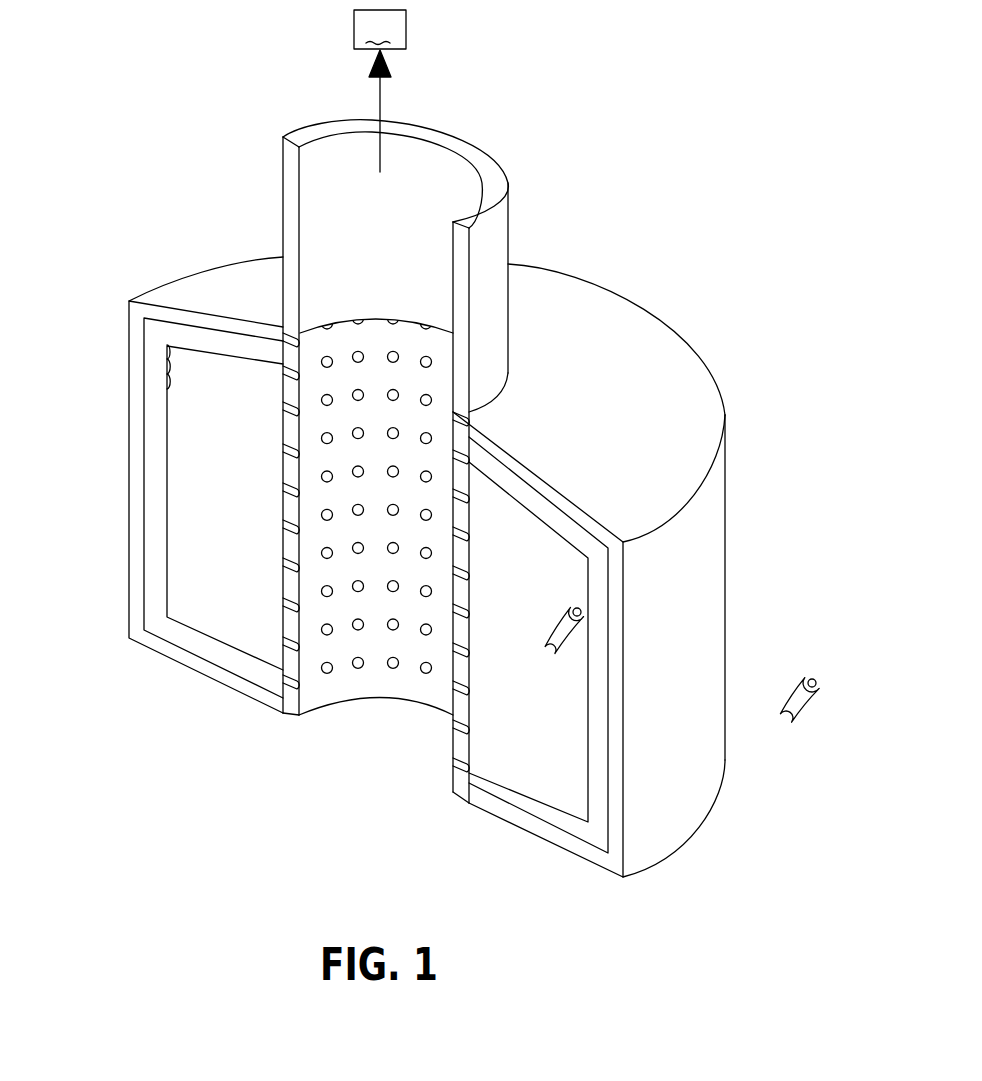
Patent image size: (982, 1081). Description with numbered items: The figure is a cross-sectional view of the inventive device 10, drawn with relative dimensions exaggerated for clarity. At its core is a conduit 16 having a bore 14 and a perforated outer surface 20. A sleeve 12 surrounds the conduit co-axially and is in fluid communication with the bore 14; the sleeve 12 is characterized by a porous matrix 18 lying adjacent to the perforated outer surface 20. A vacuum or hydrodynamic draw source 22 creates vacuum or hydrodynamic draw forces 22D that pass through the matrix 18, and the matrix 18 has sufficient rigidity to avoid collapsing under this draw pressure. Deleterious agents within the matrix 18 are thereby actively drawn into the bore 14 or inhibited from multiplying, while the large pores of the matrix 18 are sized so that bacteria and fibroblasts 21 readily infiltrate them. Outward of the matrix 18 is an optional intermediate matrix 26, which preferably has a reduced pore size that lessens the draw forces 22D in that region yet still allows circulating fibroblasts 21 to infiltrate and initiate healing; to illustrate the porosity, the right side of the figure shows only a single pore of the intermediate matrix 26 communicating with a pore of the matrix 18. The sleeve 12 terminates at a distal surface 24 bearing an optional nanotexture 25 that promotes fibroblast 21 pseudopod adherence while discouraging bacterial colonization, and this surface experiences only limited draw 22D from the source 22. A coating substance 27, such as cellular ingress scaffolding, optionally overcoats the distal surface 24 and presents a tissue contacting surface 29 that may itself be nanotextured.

The device 10 is at (707, 265).
The sleeve 12 is at (528, 777).
The bore 14 is at (328, 643).
The conduit 16 is at (460, 144).
The porous matrix 18 is at (257, 638).
The perforated outer surface 20 is at (490, 243).
The fibroblasts 21 is at (582, 611).
The vacuum or hydrodynamic draw source 22 is at (380, 91).
The vacuum or hydrodynamic draw forces 22D is at (378, 153).
The distal surface 24 is at (163, 640).
The nanotexture 25 is at (168, 362).
The intermediate matrix 26 is at (213, 653).
The coating substance 27 is at (137, 613).
The tissue contacting surface 29 is at (128, 451).